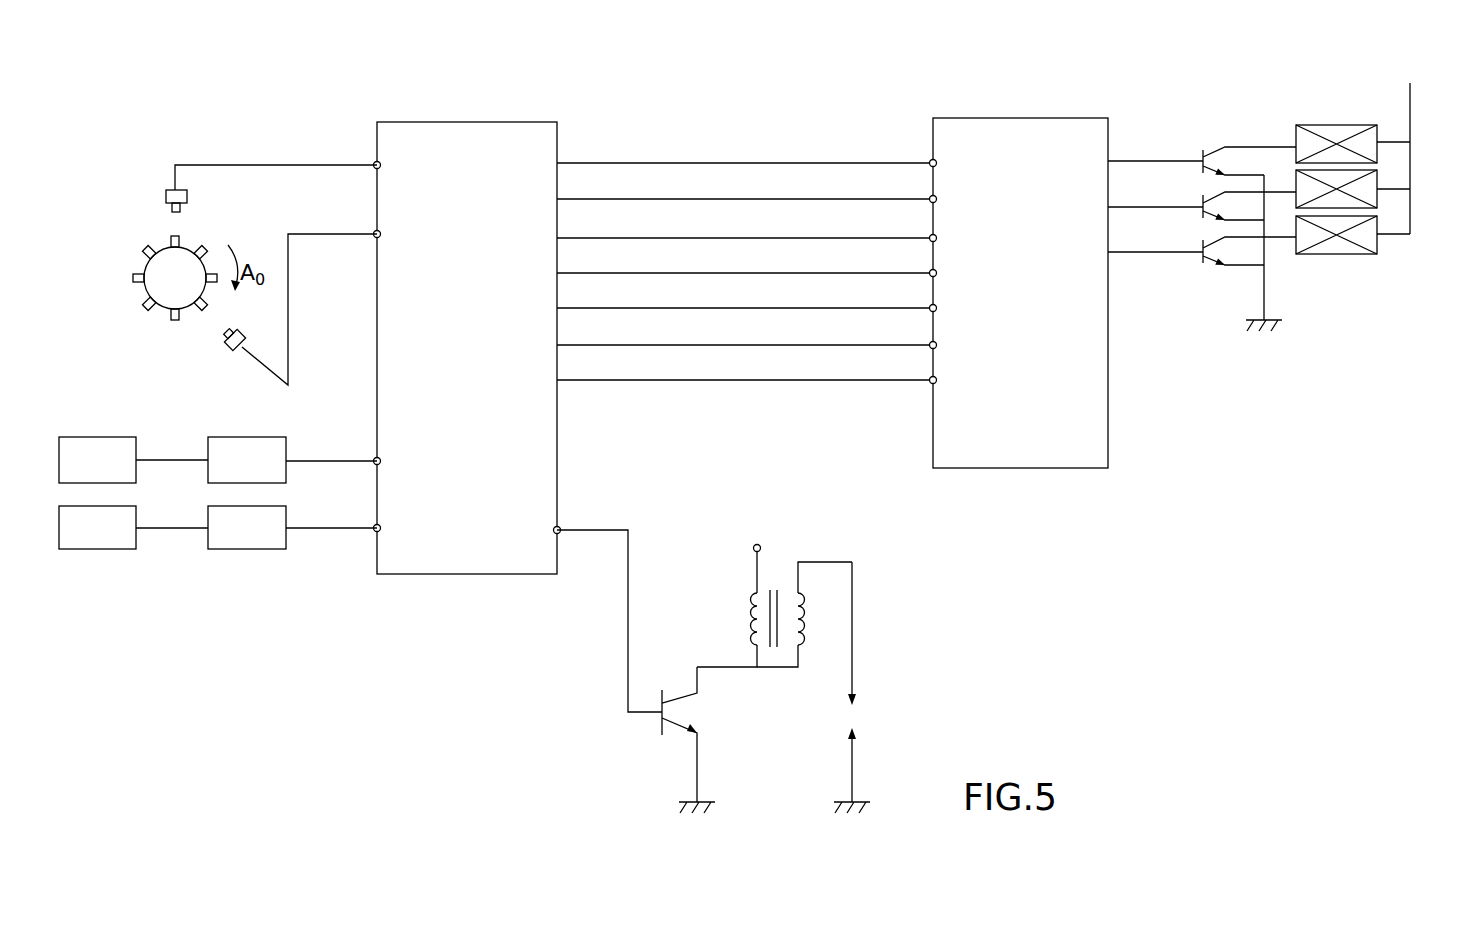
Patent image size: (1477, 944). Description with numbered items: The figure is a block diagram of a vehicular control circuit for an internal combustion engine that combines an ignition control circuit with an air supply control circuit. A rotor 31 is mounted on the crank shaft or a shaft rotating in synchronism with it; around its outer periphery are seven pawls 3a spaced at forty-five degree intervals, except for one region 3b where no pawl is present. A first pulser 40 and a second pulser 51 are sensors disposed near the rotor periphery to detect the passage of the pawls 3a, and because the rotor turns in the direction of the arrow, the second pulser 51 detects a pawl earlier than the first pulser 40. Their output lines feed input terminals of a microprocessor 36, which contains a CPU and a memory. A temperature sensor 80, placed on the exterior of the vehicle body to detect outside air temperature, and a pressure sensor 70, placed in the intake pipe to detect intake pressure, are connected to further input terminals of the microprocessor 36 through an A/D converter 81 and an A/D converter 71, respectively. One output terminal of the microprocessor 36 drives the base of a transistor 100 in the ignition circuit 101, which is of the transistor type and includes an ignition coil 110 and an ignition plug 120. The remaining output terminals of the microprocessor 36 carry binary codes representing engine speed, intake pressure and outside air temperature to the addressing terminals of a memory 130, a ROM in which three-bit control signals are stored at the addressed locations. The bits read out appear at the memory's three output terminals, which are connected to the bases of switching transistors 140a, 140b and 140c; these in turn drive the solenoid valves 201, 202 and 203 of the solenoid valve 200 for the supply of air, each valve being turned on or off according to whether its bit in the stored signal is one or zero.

The rotor 31 is at (148, 290).
The pawls 3a is at (144, 248).
The region 3b is at (189, 318).
The first pulser 40 is at (167, 195).
The second pulser 51 is at (236, 350).
The microprocessor 36 is at (467, 575).
The temperature sensor 80 is at (82, 437).
The A/D converter 81 is at (280, 437).
The pressure sensor 70 is at (108, 550).
The A/D converter 71 is at (260, 550).
The memory 130 is at (1020, 469).
The switching transistor 140a is at (1202, 152).
The switching transistor 140b is at (1201, 201).
The switching transistor 140c is at (1202, 262).
The solenoid valve 200 is at (1376, 190).
The solenoid valve 201 is at (1340, 255).
The solenoid valve 202 is at (1380, 178).
The solenoid valve 203 is at (1331, 125).
The transistor 100 is at (662, 727).
The ignition coil 110 is at (777, 580).
The ignition plug 120 is at (856, 713).
The ignition circuit 101 is at (778, 803).